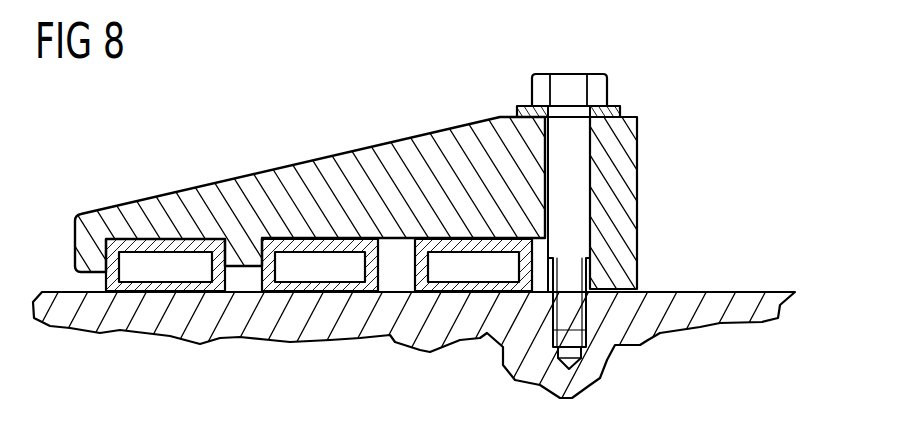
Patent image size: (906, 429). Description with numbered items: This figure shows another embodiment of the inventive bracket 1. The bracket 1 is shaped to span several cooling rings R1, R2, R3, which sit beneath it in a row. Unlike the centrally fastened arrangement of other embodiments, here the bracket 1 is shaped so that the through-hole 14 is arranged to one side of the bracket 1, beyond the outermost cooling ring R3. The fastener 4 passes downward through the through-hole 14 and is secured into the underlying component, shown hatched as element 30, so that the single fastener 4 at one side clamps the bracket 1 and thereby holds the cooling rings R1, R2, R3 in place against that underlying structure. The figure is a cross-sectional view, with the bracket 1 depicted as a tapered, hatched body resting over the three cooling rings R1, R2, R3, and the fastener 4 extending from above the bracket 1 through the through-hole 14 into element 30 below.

The bracket 1 is at (359, 130).
The fastener 4 is at (575, 159).
The through-hole 14 is at (593, 222).
The base / mounting surface 30 is at (746, 312).
The cooling ring R1 is at (165, 266).
The cooling ring R2 is at (320, 266).
The cooling ring R3 is at (472, 266).